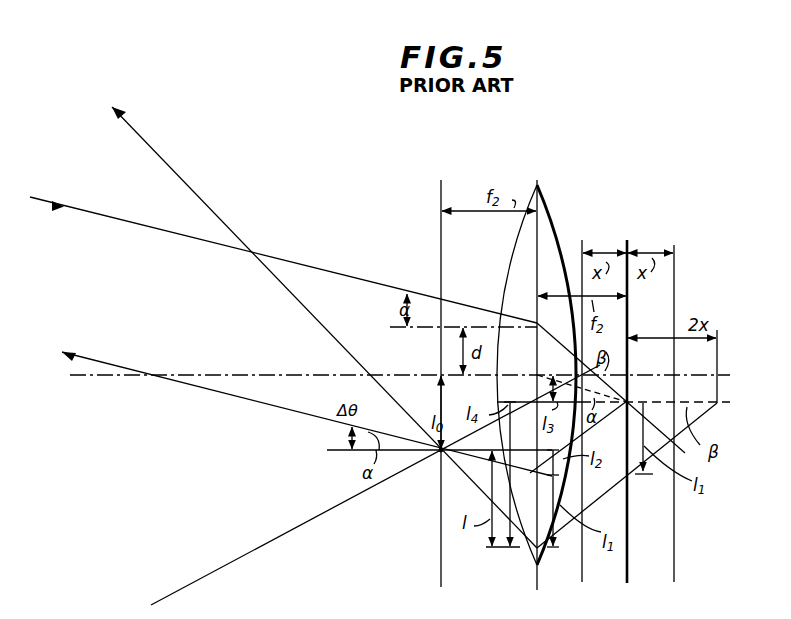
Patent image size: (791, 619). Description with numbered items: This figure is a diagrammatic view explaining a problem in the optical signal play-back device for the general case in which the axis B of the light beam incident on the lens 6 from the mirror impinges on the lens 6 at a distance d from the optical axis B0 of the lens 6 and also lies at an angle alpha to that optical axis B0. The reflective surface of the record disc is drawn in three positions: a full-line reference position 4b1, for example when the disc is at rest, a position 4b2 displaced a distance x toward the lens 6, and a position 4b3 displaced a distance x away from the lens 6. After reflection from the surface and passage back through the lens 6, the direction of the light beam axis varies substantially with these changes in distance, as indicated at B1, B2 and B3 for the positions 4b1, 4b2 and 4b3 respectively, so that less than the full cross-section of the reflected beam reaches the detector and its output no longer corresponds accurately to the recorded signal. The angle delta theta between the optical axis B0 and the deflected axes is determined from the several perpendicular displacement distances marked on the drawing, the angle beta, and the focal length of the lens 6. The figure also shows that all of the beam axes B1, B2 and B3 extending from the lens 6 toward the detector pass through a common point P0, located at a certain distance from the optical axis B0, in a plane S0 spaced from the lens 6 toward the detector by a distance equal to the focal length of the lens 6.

The lens 6 is at (539, 199).
The reference position of reflective surface 4b 4b1 is at (627, 240).
The position of reflective surface 4b moved toward lens 4b2 is at (582, 240).
The position of reflective surface 4b moved away from lens 4b3 is at (674, 245).
The axis of incident light beam B is at (332, 271).
The optical axis of lens B0 is at (82, 379).
The light beam axis for reference position B1 is at (248, 409).
The light beam axis for surface moved toward lens B2 is at (254, 551).
The light beam axis for surface moved away from lens B3 is at (190, 187).
The common point P0 is at (428, 468).
The plane S0 is at (441, 397).